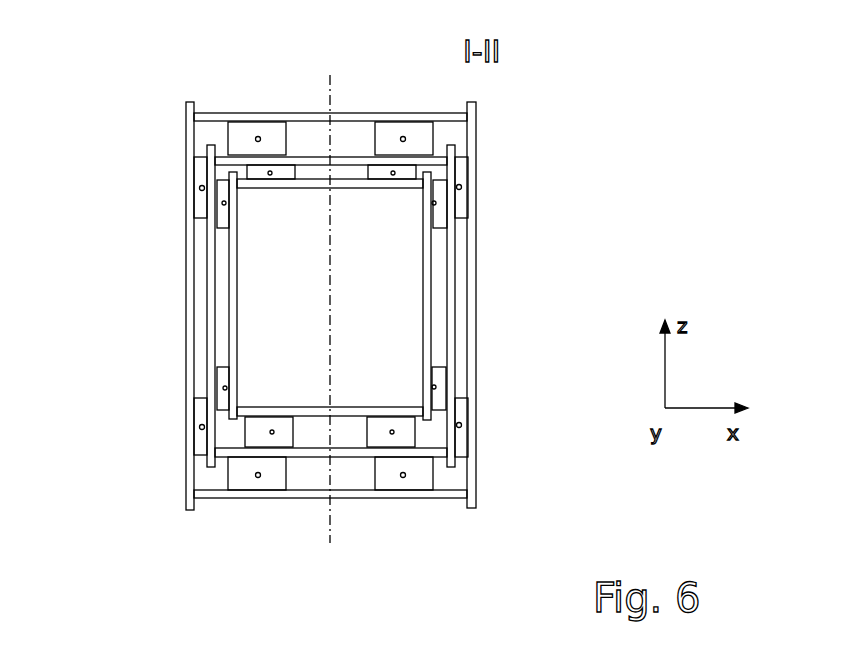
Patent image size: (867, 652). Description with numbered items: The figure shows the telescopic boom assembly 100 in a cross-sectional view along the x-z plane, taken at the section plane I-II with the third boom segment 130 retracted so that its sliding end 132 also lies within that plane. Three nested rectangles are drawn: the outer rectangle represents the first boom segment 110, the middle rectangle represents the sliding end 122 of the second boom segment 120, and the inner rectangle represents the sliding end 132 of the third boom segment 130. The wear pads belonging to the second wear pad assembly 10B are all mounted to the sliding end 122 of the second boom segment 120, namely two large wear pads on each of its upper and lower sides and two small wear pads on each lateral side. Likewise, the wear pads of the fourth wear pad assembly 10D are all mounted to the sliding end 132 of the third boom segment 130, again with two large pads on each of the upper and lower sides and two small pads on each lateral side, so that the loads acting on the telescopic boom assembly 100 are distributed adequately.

The telescopic boom assembly 100 is at (158, 82).
The first boom segment 110 is at (186, 142).
The second boom segment 120 is at (208, 255).
The sliding end of the second boom segment 122 is at (458, 303).
The third boom segment 130 is at (233, 322).
The sliding end of the third boom segment 132 is at (436, 265).
The second wear pad assembly 10B is at (380, 538).
The fourth wear pad assembly 10D is at (378, 179).